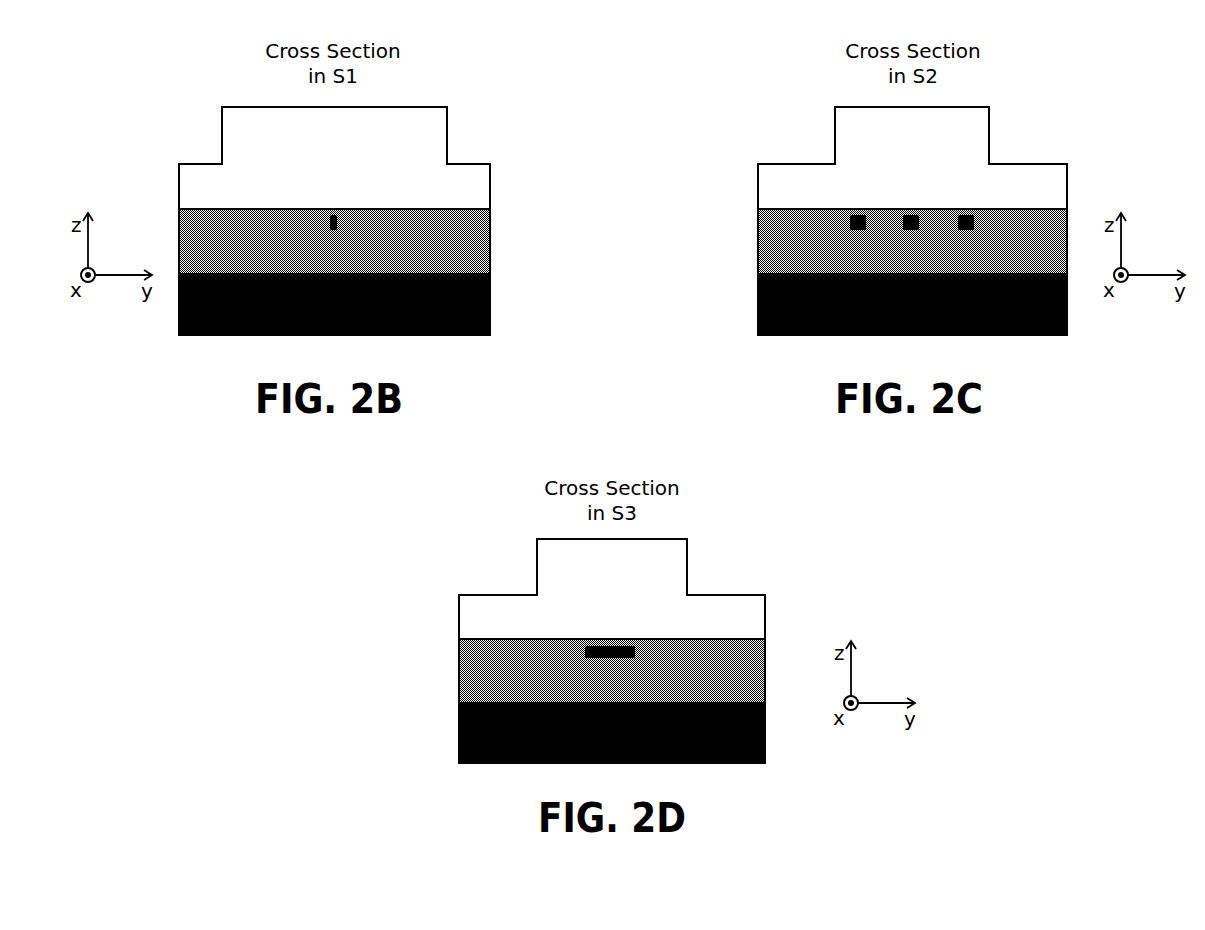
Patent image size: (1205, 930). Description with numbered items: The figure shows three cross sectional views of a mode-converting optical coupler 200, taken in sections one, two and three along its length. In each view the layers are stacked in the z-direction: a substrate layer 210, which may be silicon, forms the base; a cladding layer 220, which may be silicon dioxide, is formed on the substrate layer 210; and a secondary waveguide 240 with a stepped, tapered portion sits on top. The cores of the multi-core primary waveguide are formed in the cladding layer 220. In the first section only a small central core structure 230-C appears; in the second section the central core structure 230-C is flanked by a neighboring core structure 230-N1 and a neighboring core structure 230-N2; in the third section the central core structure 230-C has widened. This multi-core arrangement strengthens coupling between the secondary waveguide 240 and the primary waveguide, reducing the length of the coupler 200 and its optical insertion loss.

In FIG. 2B, the mode-converting optical coupler 200 is at (186, 83).
In FIG. 2C, the mode-converting optical coupler 200 is at (803, 83).
In FIG. 2D, the mode-converting optical coupler 200 is at (483, 523).
In FIG. 2B, the substrate layer 210 is at (226, 303).
In FIG. 2C, the substrate layer 210 is at (805, 303).
In FIG. 2D, the substrate layer 210 is at (506, 733).
In FIG. 2B, the cladding layer 220 is at (226, 238).
In FIG. 2C, the cladding layer 220 is at (805, 238).
In FIG. 2D, the cladding layer 220 is at (506, 667).
In FIG. 2B, the central core structure 230-C is at (334, 212).
In FIG. 2C, the central core structure 230-C is at (911, 211).
In FIG. 2D, the central core structure 230-C is at (612, 643).
In FIG. 2C, the neighboring core structure 230-N1 is at (858, 232).
In FIG. 2C, the neighboring core structure 230-N2 is at (965, 232).
In FIG. 2B, the secondary waveguide 240 is at (226, 193).
In FIG. 2C, the secondary waveguide 240 is at (805, 193).
In FIG. 2D, the secondary waveguide 240 is at (506, 623).